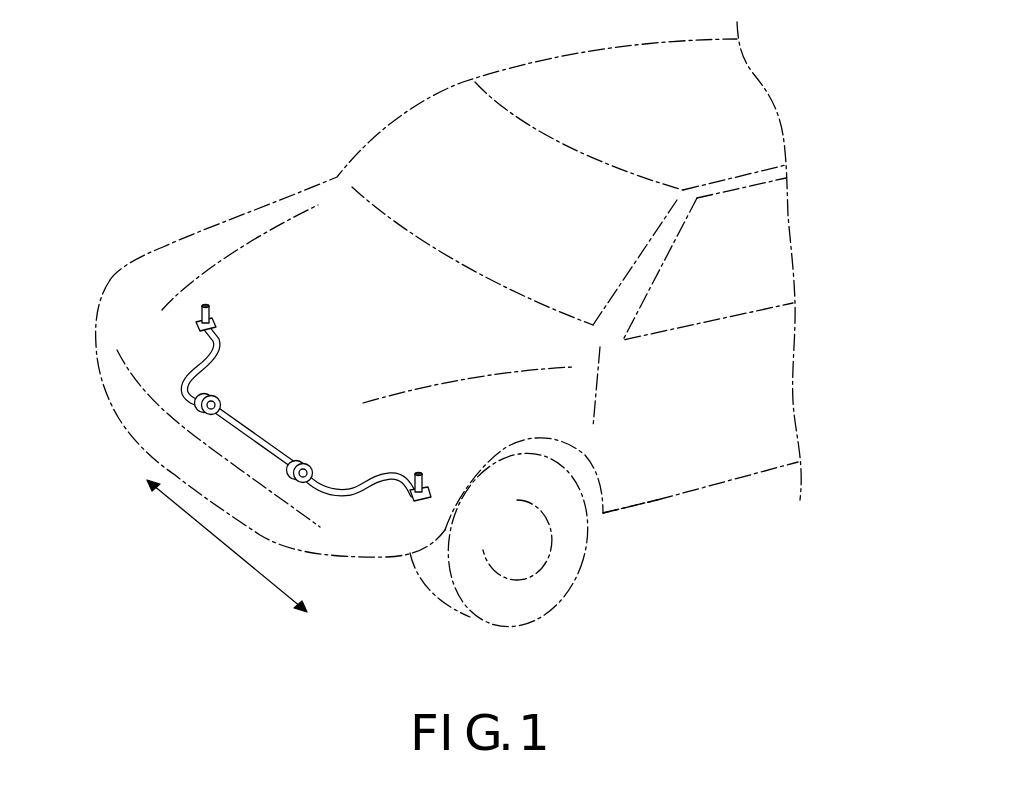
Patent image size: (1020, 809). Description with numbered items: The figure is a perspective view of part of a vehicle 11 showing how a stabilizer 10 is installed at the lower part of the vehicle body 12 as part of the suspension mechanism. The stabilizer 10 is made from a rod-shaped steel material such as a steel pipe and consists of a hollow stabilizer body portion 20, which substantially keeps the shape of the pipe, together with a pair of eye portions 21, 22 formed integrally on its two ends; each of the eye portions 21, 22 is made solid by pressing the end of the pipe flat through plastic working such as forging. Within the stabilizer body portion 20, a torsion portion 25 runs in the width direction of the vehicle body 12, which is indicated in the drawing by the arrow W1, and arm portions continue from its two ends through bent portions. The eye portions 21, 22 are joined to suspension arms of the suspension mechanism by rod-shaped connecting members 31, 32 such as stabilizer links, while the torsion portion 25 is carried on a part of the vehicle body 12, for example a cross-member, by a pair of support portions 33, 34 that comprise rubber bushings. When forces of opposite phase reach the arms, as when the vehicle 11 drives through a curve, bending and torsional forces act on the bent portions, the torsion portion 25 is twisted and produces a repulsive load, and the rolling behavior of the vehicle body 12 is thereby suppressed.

The stabilizer 10 is at (243, 443).
The vehicle 11 is at (230, 153).
The vehicle body 12 is at (622, 510).
The stabilizer body portion 20 is at (298, 455).
The eye portion 21 is at (410, 495).
The eye portion 22 is at (198, 333).
The torsion portion 25 is at (262, 438).
The connecting member 31 is at (430, 455).
The connecting member 32 is at (212, 313).
The support portion 33 is at (311, 465).
The support portion 34 is at (217, 393).
The width direction arrow W1 is at (232, 553).